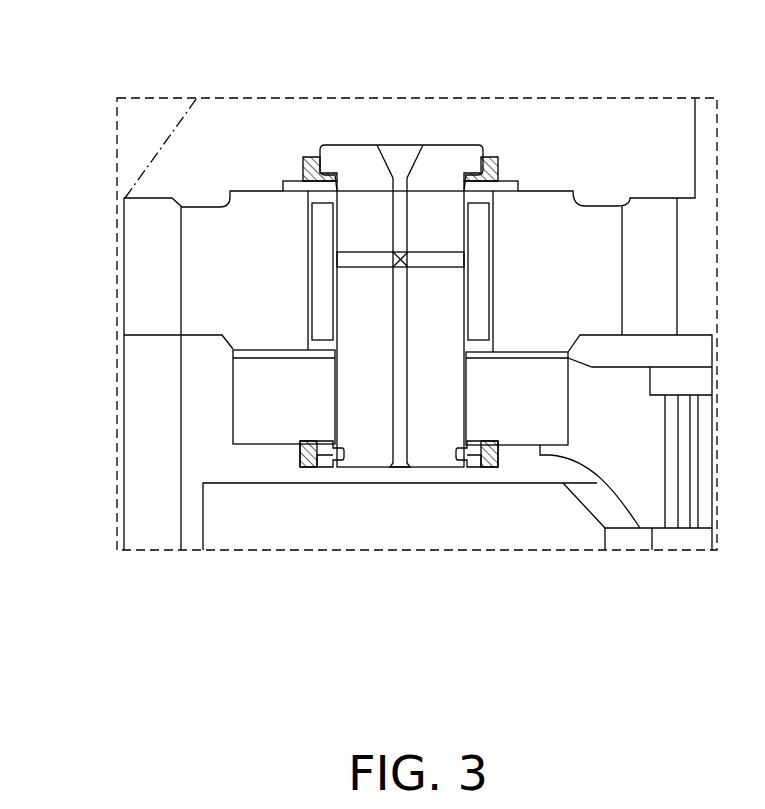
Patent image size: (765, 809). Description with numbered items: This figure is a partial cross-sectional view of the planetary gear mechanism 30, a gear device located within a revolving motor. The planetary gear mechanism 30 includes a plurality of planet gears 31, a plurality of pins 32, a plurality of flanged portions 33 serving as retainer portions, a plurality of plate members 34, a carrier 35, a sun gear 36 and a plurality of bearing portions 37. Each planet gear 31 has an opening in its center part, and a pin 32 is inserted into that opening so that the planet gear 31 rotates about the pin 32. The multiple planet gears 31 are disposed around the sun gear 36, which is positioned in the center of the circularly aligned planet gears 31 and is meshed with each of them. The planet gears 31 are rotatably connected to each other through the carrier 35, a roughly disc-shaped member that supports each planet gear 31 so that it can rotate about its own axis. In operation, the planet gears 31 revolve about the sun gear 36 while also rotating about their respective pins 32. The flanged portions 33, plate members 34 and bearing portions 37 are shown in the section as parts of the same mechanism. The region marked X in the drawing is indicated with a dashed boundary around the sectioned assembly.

The planetary gear mechanism 30 is at (553, 113).
The planet gear 31 is at (215, 236).
The pin 32 is at (437, 440).
The flanged portion 33 is at (485, 157).
The plate member 34 is at (305, 157).
The carrier 35 is at (260, 433).
The sun gear 36 is at (637, 305).
The bearing portion 37 is at (322, 297).
The section boundary X is at (113, 520).